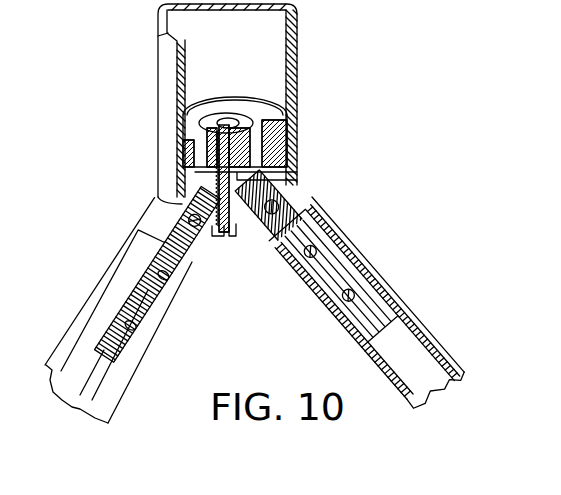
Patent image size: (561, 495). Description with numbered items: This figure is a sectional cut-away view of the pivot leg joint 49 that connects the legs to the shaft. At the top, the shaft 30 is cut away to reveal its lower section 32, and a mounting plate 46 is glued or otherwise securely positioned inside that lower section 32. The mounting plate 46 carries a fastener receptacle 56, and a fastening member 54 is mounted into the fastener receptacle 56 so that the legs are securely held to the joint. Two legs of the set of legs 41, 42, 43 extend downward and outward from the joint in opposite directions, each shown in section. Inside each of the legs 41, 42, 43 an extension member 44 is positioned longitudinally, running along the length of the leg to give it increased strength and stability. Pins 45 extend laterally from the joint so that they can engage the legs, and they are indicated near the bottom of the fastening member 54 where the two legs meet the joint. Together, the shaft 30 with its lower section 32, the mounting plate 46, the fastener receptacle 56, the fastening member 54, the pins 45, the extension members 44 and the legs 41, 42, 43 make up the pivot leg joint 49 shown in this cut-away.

The shaft 30 is at (310, 53).
The lower section 32 is at (165, 92).
The leg 41 is at (87, 345).
The leg 42 is at (430, 340).
The leg 43 is at (93, 290).
The extension member 44 is at (180, 238).
The pin 45 is at (198, 228).
The mounting plate 46 is at (253, 100).
The pivot leg joint 49 is at (398, 122).
The fastening member 54 is at (240, 230).
The fastener receptacle 56 is at (213, 114).